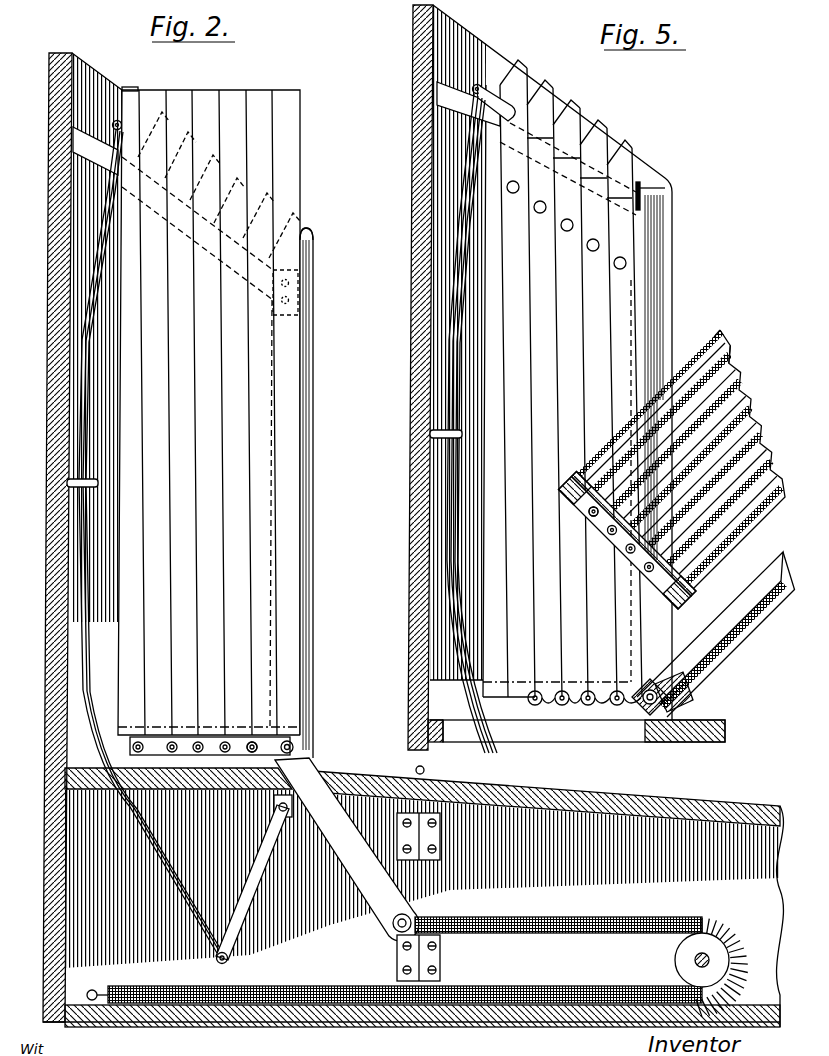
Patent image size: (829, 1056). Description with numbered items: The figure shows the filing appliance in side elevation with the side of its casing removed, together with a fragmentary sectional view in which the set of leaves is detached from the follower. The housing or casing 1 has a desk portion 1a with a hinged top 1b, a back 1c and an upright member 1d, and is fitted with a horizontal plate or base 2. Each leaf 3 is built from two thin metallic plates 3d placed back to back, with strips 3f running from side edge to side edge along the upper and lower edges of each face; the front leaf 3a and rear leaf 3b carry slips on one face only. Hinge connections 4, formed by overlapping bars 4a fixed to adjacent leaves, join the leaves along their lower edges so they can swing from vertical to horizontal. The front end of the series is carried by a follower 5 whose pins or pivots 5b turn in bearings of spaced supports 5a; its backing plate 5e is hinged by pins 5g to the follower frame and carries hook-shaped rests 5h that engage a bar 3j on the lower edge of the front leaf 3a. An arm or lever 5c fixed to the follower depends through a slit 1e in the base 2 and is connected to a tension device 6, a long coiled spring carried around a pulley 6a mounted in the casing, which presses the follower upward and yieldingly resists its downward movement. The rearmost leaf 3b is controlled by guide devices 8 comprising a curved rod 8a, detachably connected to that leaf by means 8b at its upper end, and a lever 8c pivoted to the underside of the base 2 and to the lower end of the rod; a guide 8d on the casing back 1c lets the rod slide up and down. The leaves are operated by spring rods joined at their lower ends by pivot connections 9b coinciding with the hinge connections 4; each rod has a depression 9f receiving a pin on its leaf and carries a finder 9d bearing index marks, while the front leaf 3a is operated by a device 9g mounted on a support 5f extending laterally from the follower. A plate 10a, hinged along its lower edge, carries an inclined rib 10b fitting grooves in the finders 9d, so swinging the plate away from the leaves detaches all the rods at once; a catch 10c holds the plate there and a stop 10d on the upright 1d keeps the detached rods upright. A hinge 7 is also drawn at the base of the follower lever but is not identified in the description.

In FIG. 2, the housing or casing 1 is at (397, 989).
In FIG. 2, the desk portion 1a is at (424, 916).
In FIG. 2, the hinged top 1b is at (740, 804).
In FIG. 2, the back 1c is at (50, 448).
In FIG. 5, the back 1c is at (412, 490).
In FIG. 2, the upright member 1d is at (94, 78).
In FIG. 5, the upright member 1d is at (478, 56).
In FIG. 2, the slit 1e is at (243, 786).
In FIG. 2, the horizontal plate or base 2 is at (62, 778).
In FIG. 5, the horizontal plate or base 2 is at (728, 731).
In FIG. 2, the leaf 3 is at (209, 411).
In FIG. 5, the leaf 3 is at (622, 356).
In FIG. 5, the front leaf 3a is at (682, 459).
In FIG. 2, the rear leaf 3b is at (136, 478).
In FIG. 5, the rear leaf 3b is at (722, 342).
In FIG. 5, the thin metallic plate 3d is at (745, 356).
In FIG. 5, the strips 3f is at (596, 478).
In FIG. 5, the bar 3j is at (576, 488).
In FIG. 2, the hinge connections 4 is at (214, 750).
In FIG. 5, the hinge connections 4 is at (625, 543).
In FIG. 2, the bars 4a is at (250, 752).
In FIG. 5, the bars 4a is at (594, 516).
In FIG. 2, the follower or carrier 5 is at (313, 620).
In FIG. 5, the follower or carrier 5 is at (736, 634).
In FIG. 5, the spaced supports 5a is at (700, 696).
In FIG. 2, the pins or pivots 5b is at (294, 748).
In FIG. 2, the arm or lever 5c is at (366, 890).
In FIG. 5, the backing plate 5e is at (728, 612).
In FIG. 2, the support 5f is at (300, 295).
In FIG. 5, the pins 5g is at (652, 689).
In FIG. 5, the rests 5h is at (645, 706).
In FIG. 2, the tension device 6 is at (394, 950).
In FIG. 2, the pulley 6a is at (714, 948).
In FIG. 2, the hinge 7 is at (416, 897).
In FIG. 2, the guide devices 8 is at (151, 542).
In FIG. 5, the guide devices 8 is at (472, 423).
In FIG. 2, the rod 8a is at (90, 480).
In FIG. 5, the rod 8a is at (481, 716).
In FIG. 2, the detachable connecting means 8b is at (113, 122).
In FIG. 5, the detachable connecting means 8b is at (494, 92).
In FIG. 2, the lever 8c is at (246, 910).
In FIG. 5, the guide 8d is at (456, 438).
In FIG. 5, the pivot connections 9b is at (589, 706).
In FIG. 2, the operating devices or finders 9d is at (214, 172).
In FIG. 5, the operating devices or finders 9d is at (627, 142).
In FIG. 5, the aperture or depression 9f is at (514, 193).
In FIG. 2, the operating device 9g is at (304, 229).
In FIG. 2, the plate 10a is at (126, 680).
In FIG. 5, the plate 10a is at (494, 672).
In FIG. 2, the rod or rib 10b is at (197, 228).
In FIG. 5, the rod or rib 10b is at (636, 178).
In FIG. 2, the catch and release device 10c is at (72, 142).
In FIG. 5, the catch and release device 10c is at (436, 92).
In FIG. 5, the stop 10d is at (645, 188).